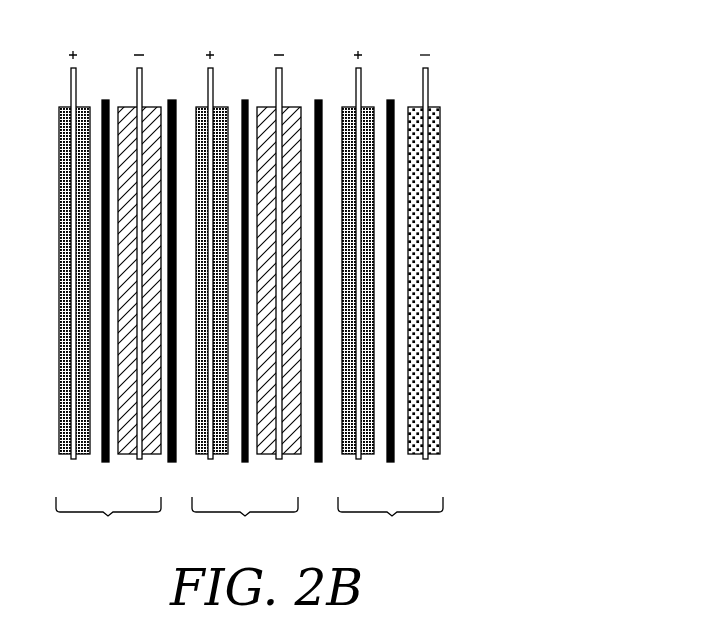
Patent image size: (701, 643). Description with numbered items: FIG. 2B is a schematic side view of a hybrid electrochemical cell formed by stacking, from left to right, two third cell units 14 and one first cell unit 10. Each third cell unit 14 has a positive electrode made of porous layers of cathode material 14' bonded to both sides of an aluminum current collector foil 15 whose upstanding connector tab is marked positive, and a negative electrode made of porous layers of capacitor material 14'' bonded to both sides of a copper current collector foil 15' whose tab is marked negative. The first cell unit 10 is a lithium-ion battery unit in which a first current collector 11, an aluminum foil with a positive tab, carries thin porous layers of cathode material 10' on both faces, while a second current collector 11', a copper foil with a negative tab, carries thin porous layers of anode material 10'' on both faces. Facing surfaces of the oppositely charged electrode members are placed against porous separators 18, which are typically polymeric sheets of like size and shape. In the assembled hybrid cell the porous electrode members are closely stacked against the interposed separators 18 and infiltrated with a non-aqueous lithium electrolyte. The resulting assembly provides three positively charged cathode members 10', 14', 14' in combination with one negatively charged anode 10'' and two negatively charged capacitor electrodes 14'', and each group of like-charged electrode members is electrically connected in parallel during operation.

The first cell unit 10 is at (413, 281).
The cathode material layers 10' is at (418, 280).
The anode material layers 10'' is at (453, 280).
The first current collector 11 is at (344, 240).
The second current collector 11' is at (417, 238).
The third cell unit 14 is at (199, 274).
The cathode material layers 14' is at (117, 299).
The capacitor material layers 14'' is at (153, 299).
The current collector foil 15 is at (128, 240).
The copper current collector foil 15' is at (195, 239).
The porous separator 18 is at (105, 99).